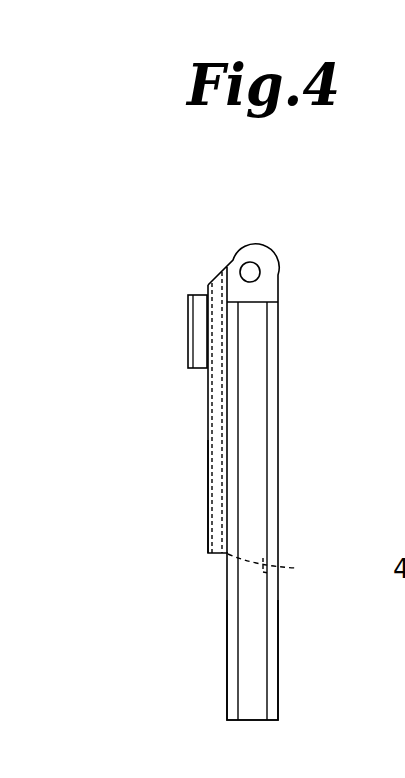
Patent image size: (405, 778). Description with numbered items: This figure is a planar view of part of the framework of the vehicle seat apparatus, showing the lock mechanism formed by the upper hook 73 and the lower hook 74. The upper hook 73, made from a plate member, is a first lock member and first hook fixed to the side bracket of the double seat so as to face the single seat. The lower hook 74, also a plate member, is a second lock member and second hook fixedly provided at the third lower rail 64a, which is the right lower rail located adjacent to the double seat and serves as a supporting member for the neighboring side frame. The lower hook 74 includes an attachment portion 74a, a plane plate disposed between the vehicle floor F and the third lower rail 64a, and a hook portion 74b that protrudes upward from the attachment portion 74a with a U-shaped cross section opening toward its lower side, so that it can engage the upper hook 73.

The vehicle floor F is at (324, 333).
The third lower rail 64a is at (227, 652).
The upper hook 73 is at (188, 331).
The lower hook 74 is at (207, 421).
The attachment portion 74a is at (289, 569).
The hook portion 74b is at (207, 500).